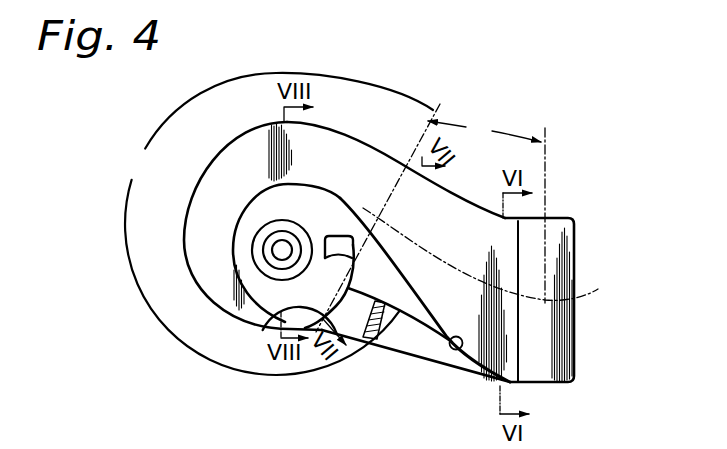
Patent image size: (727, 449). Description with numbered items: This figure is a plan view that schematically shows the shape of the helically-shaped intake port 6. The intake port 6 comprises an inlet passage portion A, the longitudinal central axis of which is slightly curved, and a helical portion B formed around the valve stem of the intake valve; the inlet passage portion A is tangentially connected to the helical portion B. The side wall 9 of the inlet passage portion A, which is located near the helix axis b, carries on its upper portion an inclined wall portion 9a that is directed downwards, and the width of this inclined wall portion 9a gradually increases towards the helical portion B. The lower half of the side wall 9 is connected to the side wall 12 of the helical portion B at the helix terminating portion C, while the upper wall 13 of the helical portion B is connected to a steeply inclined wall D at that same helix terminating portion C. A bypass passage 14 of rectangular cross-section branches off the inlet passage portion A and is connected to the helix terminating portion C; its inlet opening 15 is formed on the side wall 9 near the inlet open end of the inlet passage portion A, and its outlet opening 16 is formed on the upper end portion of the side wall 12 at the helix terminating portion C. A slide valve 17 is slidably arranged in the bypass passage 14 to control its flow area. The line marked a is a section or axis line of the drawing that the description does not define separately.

The helically-shaped intake port 6 is at (569, 217).
The side wall 9 is at (512, 384).
The inclined wall portion 9a is at (438, 342).
The side wall of the helical portion 12 is at (194, 278).
The upper wall of the helical portion 13 is at (191, 226).
The bypass passage 14 is at (410, 344).
The inlet opening 15 is at (452, 348).
The outlet opening 16 is at (262, 331).
The slide valve 17 is at (378, 343).
The inlet passage portion A is at (486, 211).
The helical portion B is at (279, 224).
The helix terminating portion C is at (345, 271).
The steeply inclined wall D is at (336, 246).
The axis a is at (491, 254).
The helix axis b is at (273, 256).